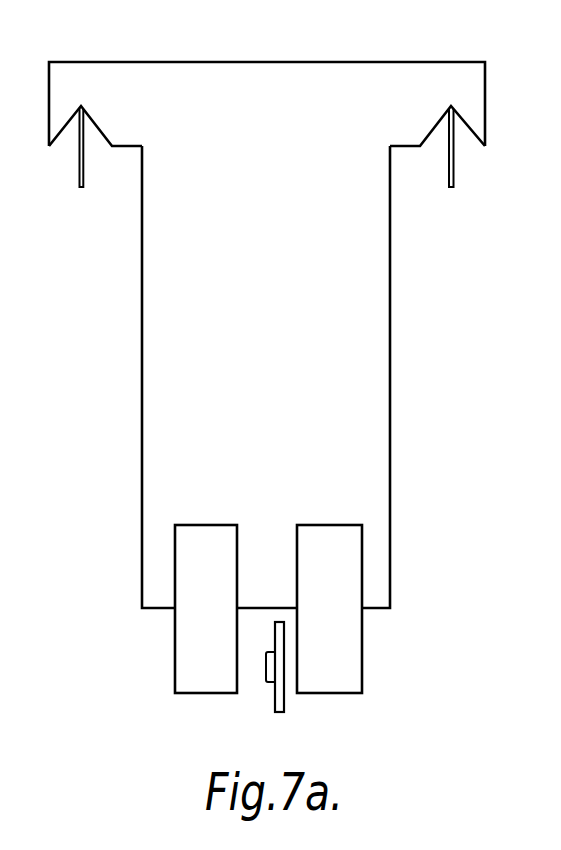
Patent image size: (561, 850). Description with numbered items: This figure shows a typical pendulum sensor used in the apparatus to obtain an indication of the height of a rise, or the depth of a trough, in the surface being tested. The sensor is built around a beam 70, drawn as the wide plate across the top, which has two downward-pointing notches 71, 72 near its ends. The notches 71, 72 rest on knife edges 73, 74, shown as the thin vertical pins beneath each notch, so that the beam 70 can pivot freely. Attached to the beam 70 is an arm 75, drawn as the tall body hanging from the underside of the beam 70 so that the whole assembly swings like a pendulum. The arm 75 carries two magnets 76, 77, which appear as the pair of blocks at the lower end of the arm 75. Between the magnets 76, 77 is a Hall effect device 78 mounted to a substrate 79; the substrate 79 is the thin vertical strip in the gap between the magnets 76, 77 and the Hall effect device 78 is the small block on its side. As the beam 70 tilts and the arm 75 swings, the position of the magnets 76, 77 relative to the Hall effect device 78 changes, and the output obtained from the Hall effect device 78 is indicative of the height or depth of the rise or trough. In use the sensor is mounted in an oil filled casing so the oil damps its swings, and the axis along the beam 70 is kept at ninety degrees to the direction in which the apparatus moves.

The beam 70 is at (258, 77).
The notch 71 is at (62, 142).
The notch 72 is at (472, 143).
The knife edge 73 is at (87, 171).
The knife edge 74 is at (445, 172).
The arm 75 is at (277, 357).
The magnet 76 is at (180, 637).
The magnet 77 is at (357, 633).
The Hall effect device 78 is at (268, 668).
The substrate 79 is at (280, 692).